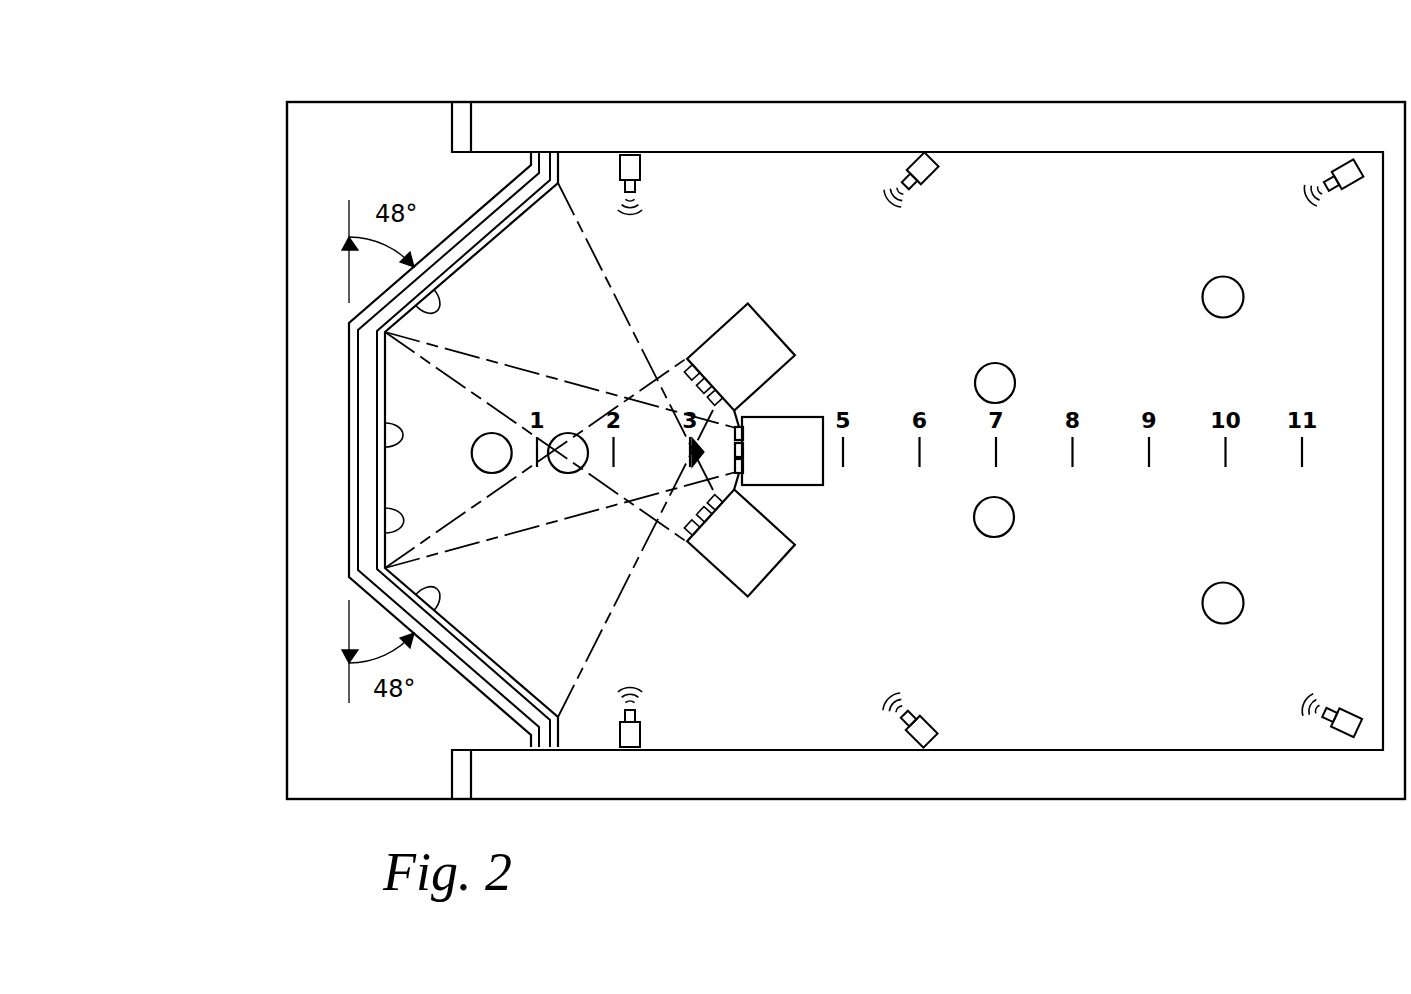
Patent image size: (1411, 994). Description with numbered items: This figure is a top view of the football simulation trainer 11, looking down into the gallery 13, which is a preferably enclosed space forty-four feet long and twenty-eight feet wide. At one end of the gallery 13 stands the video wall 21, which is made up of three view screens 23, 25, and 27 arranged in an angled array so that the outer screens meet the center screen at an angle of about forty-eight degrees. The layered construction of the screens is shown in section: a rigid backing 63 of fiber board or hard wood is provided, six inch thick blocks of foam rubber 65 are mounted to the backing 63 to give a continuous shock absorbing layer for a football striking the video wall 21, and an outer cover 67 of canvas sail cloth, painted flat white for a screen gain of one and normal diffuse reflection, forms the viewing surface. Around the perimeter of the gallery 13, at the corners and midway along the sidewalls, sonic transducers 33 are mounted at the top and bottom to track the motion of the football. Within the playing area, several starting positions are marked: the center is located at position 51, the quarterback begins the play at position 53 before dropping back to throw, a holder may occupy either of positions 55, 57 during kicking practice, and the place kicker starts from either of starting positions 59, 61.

The football simulation trainer 11 is at (1165, 66).
The gallery 13 is at (784, 153).
The video wall 21 is at (380, 372).
The view screen 23 is at (433, 593).
The view screen 25 is at (403, 522).
The view screen 27 is at (425, 318).
The sonic transducer 33 is at (640, 167).
The position 51 is at (480, 437).
The position 53 is at (570, 433).
The position 55 is at (1015, 375).
The position 57 is at (1015, 523).
The starting position 59 is at (1202, 300).
The starting position 61 is at (1203, 606).
The rigid backing 63 is at (350, 457).
The blocks of foam rubber 65 is at (365, 490).
The outer cover 67 is at (403, 445).